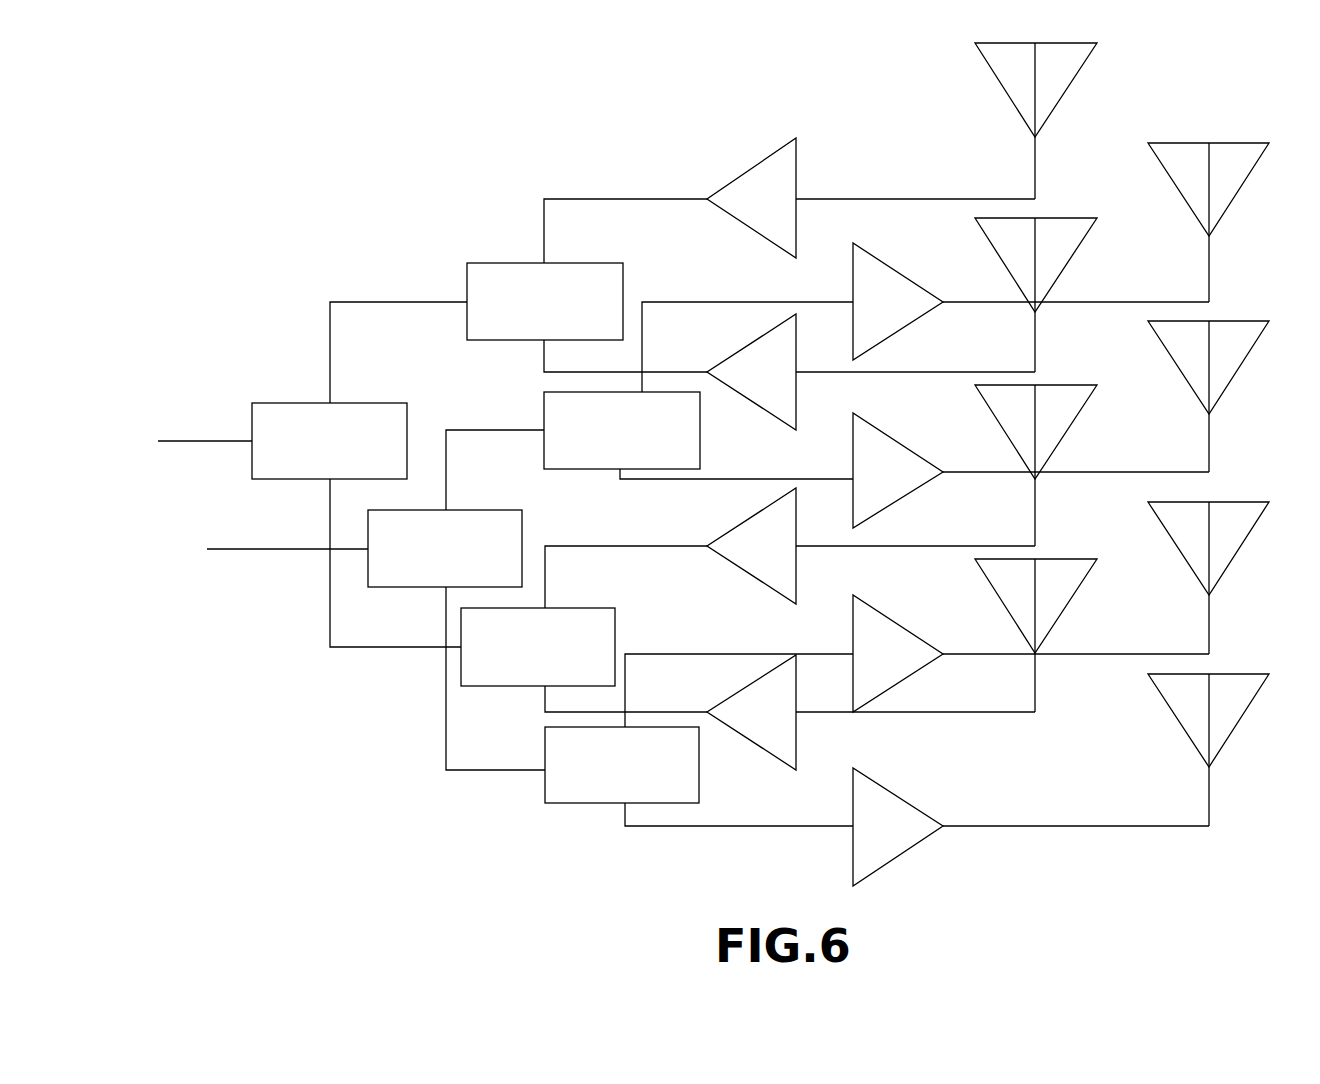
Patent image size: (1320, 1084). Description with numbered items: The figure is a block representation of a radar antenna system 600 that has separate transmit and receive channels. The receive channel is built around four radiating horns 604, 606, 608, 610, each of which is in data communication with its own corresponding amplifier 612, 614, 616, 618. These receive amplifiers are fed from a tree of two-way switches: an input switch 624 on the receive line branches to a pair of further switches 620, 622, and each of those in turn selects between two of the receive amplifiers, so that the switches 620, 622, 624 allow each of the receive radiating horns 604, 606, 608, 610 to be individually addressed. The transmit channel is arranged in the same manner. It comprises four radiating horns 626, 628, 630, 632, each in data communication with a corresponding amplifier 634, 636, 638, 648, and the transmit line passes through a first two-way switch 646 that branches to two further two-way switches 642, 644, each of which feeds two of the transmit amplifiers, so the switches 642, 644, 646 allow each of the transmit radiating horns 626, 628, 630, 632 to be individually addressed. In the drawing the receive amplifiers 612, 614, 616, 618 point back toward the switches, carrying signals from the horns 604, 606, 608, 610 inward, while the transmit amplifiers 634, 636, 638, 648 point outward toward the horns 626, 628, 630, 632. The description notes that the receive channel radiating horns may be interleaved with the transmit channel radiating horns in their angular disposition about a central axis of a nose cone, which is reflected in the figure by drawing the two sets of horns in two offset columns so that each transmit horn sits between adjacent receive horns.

The radar antenna system 600 is at (343, 138).
The radiating horn 604 is at (998, 78).
The radiating horn 606 is at (999, 255).
The antenna 608 is at (998, 420).
The radiating horn 610 is at (1000, 598).
The amplifier 612 is at (748, 172).
The amplifier 614 is at (745, 346).
The amplifier 616 is at (745, 520).
The amplifier 618 is at (757, 745).
The switch 620 is at (467, 287).
The switch 622 is at (522, 686).
The switch 624 is at (252, 427).
The radiating horn 626 is at (1178, 192).
The radiating horn 628 is at (1178, 367).
The radiating horn 630 is at (1178, 548).
The radiating horn 632 is at (1180, 725).
The amplifier 634 is at (853, 280).
The amplifier 636 is at (853, 460).
The amplifier 638 is at (853, 642).
The switch 642 is at (544, 420).
The switch 644 is at (592, 803).
The switch 646 is at (432, 587).
The transmit amplifier 648 is at (853, 818).